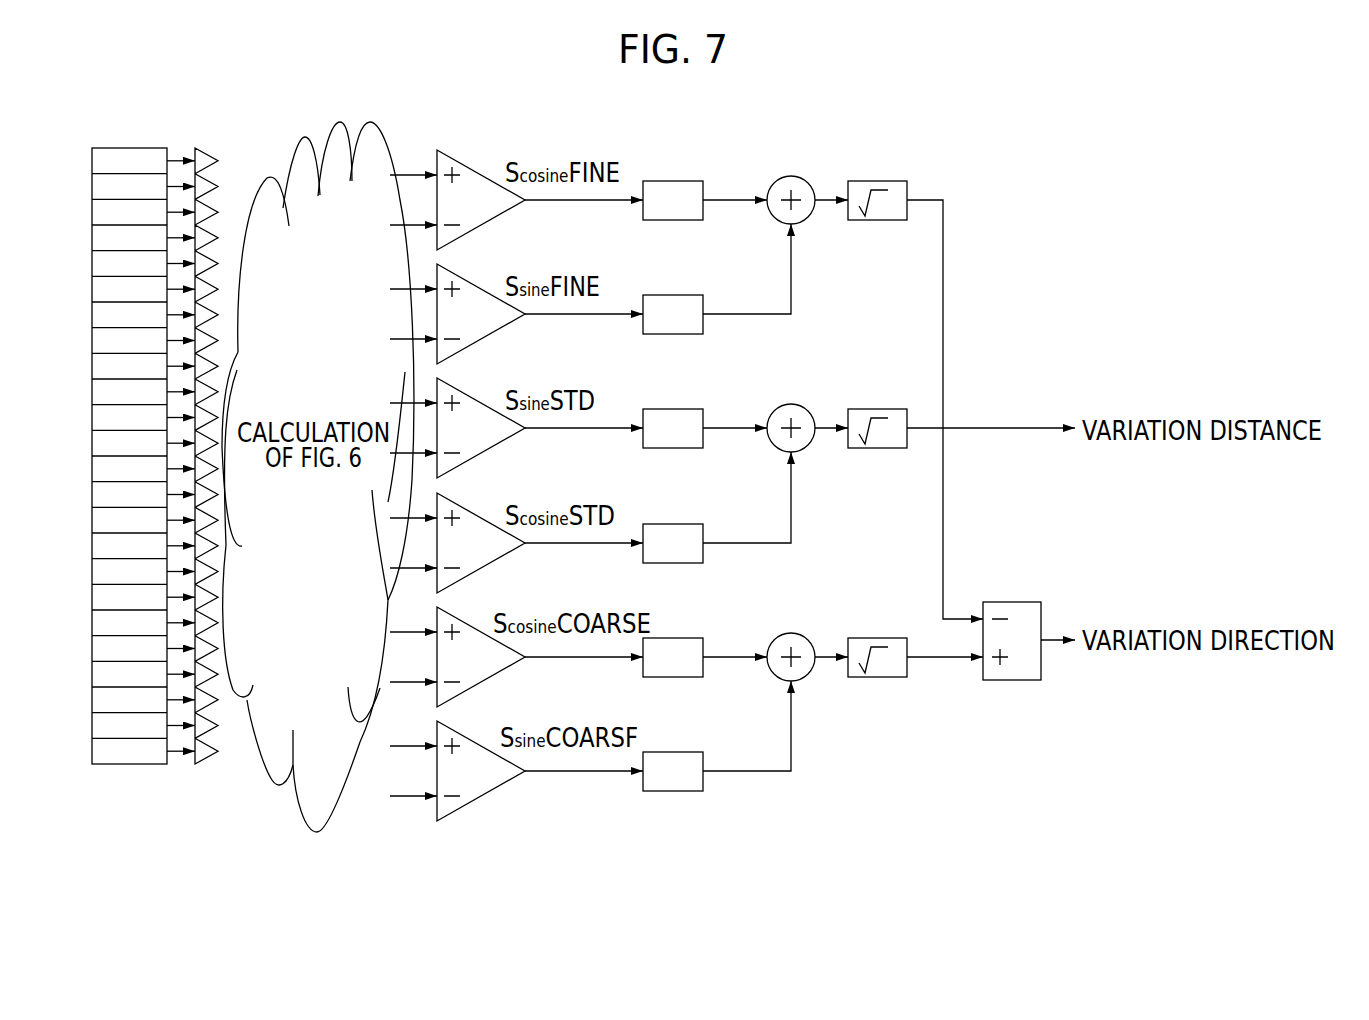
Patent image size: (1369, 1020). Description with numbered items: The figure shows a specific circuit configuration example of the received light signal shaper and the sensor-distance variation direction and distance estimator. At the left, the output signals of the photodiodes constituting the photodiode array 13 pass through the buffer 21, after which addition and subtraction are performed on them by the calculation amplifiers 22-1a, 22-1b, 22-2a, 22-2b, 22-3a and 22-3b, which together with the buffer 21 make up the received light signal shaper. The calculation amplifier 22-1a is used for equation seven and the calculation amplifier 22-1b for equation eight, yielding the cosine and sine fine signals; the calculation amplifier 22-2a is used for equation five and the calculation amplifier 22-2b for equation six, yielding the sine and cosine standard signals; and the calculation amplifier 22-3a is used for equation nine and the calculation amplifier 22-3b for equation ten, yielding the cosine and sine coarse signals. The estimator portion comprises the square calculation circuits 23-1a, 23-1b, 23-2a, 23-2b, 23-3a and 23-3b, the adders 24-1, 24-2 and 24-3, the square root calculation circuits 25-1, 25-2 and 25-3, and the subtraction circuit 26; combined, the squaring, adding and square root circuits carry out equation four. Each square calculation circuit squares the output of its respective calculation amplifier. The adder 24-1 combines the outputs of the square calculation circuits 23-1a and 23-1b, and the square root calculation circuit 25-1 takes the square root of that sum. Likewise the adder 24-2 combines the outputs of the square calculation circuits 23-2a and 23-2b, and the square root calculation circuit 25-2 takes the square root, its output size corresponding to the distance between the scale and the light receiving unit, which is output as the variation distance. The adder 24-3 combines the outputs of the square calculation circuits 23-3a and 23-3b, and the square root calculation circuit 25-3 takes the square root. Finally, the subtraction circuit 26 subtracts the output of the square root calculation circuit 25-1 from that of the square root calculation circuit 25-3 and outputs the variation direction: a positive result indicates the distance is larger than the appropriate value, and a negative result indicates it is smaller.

The photodiode array 13 is at (130, 148).
The buffer 21 is at (205, 150).
The calculation amplifier 22-1a is at (461, 164).
The calculation amplifier 22-1b is at (461, 278).
The calculation amplifier 22-2a is at (461, 392).
The calculation amplifier 22-2b is at (461, 507).
The calculation amplifier 22-3a is at (461, 621).
The calculation amplifier 22-3b is at (461, 735).
The square calculation circuit 23-1a is at (668, 181).
The square calculation circuit 23-1b is at (668, 295).
The square calculation circuit 23-2a is at (668, 409).
The square calculation circuit 23-2b is at (668, 524).
The square calculation circuit 23-3a is at (668, 638).
The square calculation circuit 23-3b is at (668, 752).
The adder 24-1 is at (808, 217).
The adder 24-2 is at (808, 445).
The adder 24-3 is at (808, 674).
The square root calculation circuit 25-1 is at (873, 181).
The square root calculation circuit 25-2 is at (873, 409).
The square root calculation circuit 25-3 is at (873, 638).
The subtraction circuit 26 is at (1000, 680).